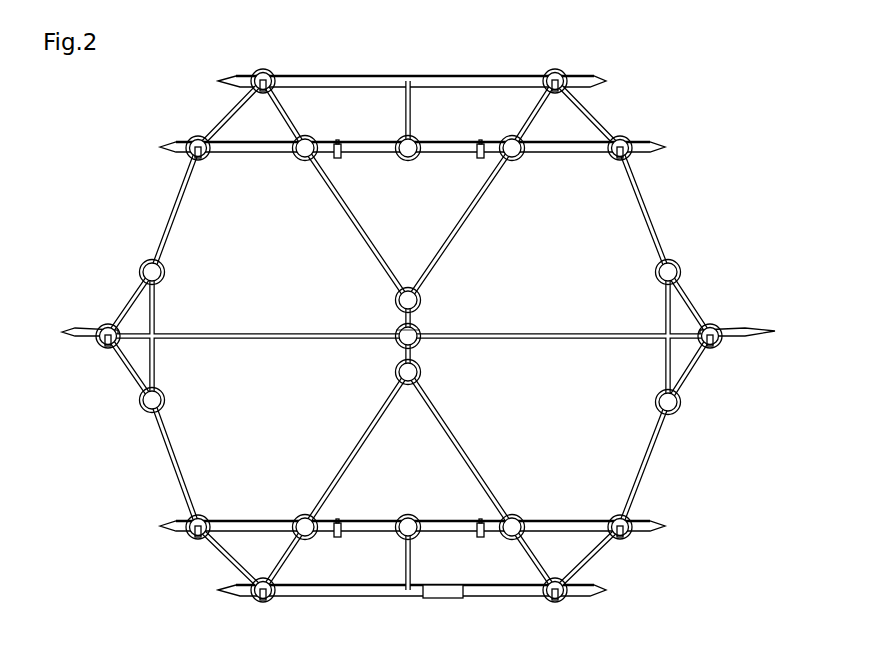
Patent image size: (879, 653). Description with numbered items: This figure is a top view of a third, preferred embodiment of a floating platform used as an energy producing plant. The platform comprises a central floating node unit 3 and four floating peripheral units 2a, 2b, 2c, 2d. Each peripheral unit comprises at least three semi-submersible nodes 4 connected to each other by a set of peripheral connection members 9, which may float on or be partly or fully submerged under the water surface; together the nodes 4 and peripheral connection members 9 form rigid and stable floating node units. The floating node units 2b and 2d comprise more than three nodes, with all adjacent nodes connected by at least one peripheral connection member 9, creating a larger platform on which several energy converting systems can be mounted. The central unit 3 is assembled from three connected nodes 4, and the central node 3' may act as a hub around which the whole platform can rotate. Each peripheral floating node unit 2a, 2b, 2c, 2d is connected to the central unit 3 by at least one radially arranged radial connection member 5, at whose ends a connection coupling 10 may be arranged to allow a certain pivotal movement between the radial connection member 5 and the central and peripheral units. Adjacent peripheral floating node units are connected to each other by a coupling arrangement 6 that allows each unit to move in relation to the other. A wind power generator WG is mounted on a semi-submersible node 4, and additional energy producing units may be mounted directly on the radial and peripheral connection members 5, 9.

The floating peripheral unit 2a is at (444, 64).
The floating peripheral unit 2b is at (742, 308).
The floating peripheral unit 2c is at (662, 591).
The floating peripheral unit 2d is at (104, 296).
The central floating node unit 3 is at (360, 318).
The central node 3' is at (460, 318).
The semi-submersible node 4 is at (263, 73).
The radial connection member 5 is at (408, 337).
The coupling arrangement 6 is at (172, 210).
The peripheral connection member 9 is at (258, 520).
The connection coupling 10 is at (484, 160).
The wind power generator WG is at (197, 137).